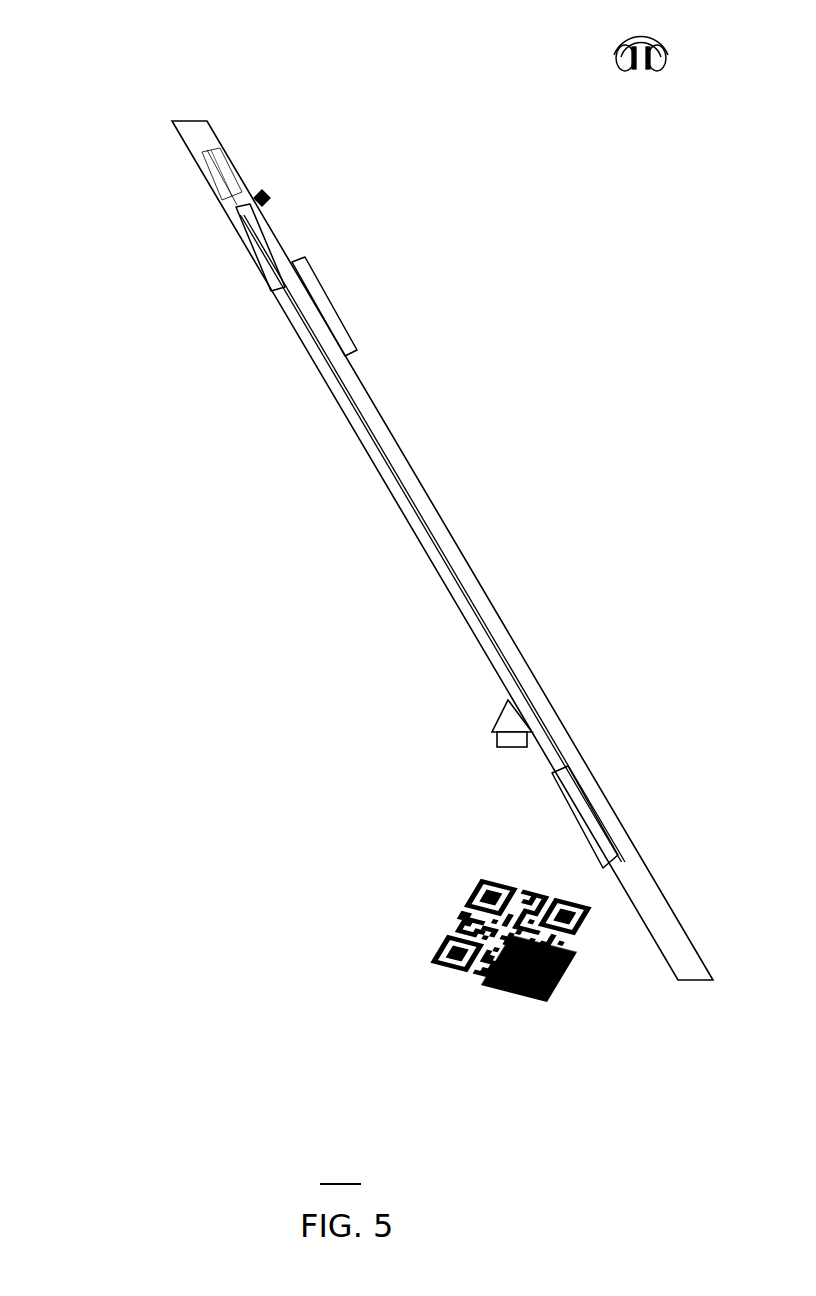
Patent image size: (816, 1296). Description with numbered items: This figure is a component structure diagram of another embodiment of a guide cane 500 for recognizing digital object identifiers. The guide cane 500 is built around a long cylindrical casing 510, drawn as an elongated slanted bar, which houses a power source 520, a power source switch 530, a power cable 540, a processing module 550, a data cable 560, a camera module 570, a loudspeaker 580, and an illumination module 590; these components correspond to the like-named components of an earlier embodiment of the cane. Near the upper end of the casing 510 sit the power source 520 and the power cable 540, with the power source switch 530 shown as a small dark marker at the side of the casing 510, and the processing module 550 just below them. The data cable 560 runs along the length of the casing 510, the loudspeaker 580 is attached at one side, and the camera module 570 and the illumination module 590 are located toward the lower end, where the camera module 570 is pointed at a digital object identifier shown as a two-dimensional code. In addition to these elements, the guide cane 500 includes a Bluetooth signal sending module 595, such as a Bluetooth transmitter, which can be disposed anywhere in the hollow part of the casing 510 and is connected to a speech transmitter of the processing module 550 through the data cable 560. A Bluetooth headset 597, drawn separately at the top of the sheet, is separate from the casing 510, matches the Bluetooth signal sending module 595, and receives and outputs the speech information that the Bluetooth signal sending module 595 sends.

The guide cane 500 is at (340, 1172).
The long cylindrical casing 510 is at (196, 119).
The power source 520 is at (215, 168).
The power source switch 530 is at (270, 201).
The power cable 540 is at (218, 192).
The processing module 550 is at (247, 247).
The data cable 560 is at (430, 531).
The camera module 570 is at (490, 712).
The loudspeaker 580 is at (340, 320).
The illumination module 590 is at (548, 782).
The Bluetooth signal sending module 595 is at (300, 415).
The Bluetooth headset 597 is at (672, 42).